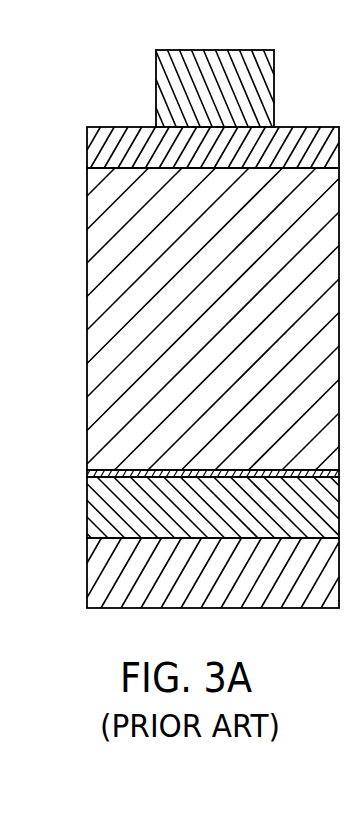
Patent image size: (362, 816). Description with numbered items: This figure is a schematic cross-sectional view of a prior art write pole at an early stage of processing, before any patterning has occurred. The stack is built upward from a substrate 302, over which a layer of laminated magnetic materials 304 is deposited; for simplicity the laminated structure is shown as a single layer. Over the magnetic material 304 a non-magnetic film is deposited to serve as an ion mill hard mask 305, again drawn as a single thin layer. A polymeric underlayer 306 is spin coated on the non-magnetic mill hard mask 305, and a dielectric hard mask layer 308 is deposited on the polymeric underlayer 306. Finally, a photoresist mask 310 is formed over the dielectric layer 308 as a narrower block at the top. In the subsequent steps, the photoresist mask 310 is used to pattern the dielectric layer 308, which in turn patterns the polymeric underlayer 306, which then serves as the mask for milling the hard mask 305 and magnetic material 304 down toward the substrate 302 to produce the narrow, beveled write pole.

The substrate 302 is at (233, 585).
The layer of laminated magnetic materials 304 is at (233, 515).
The ion mill hard mask 305 is at (87, 474).
The polymeric underlayer 306 is at (233, 315).
The dielectric hard mask layer 308 is at (233, 158).
The photoresist mask 310 is at (233, 95).